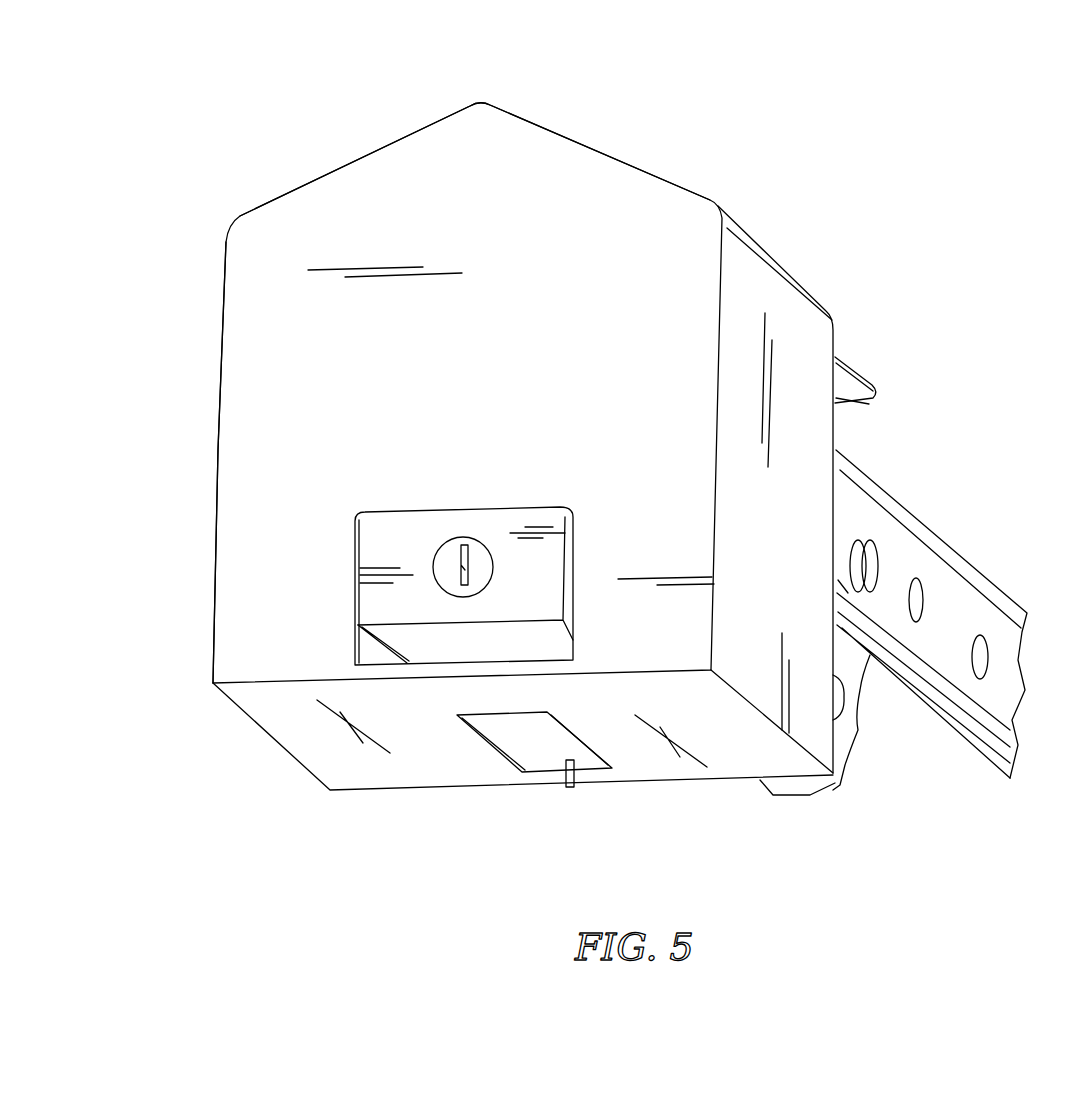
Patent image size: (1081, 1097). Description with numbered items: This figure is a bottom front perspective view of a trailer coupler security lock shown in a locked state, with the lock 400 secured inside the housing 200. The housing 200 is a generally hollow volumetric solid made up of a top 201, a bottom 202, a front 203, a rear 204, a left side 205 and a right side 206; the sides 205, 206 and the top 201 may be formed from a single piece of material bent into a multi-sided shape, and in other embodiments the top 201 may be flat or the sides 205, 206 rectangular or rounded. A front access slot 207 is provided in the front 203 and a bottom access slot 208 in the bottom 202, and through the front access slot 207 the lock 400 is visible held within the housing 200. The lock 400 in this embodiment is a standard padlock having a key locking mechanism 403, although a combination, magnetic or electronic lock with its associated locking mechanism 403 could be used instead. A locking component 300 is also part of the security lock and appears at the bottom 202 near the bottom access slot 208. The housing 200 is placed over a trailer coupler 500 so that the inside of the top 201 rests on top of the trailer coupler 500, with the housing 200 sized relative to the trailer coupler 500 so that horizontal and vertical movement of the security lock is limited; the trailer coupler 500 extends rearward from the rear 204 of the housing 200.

The housing 200 is at (541, 454).
The top 201 is at (382, 145).
The bottom 202 is at (292, 722).
The front 203 is at (508, 358).
The rear 204 is at (837, 438).
The left side 205 is at (219, 403).
The right side 206 is at (807, 348).
The front access slot 207 is at (353, 643).
The bottom access slot 208 is at (500, 757).
The locking component 300 is at (568, 758).
The lock 400 is at (403, 545).
The locking mechanism 403 is at (479, 557).
The trailer coupler 500 is at (983, 558).